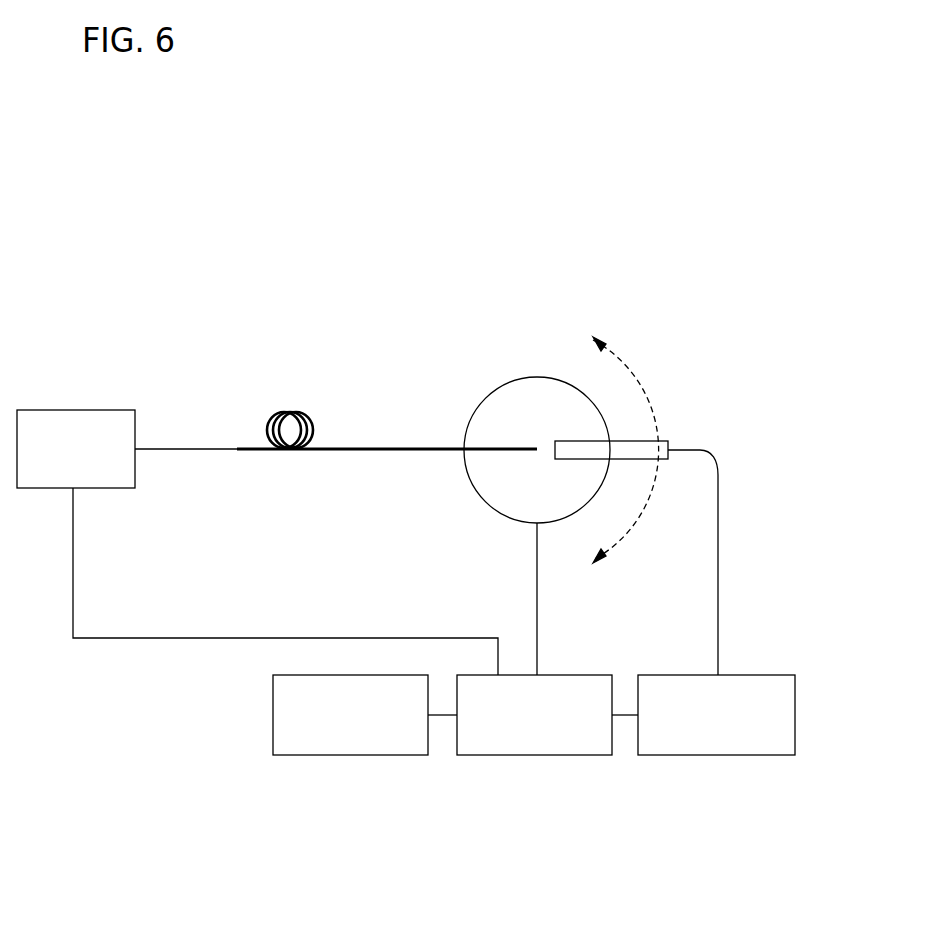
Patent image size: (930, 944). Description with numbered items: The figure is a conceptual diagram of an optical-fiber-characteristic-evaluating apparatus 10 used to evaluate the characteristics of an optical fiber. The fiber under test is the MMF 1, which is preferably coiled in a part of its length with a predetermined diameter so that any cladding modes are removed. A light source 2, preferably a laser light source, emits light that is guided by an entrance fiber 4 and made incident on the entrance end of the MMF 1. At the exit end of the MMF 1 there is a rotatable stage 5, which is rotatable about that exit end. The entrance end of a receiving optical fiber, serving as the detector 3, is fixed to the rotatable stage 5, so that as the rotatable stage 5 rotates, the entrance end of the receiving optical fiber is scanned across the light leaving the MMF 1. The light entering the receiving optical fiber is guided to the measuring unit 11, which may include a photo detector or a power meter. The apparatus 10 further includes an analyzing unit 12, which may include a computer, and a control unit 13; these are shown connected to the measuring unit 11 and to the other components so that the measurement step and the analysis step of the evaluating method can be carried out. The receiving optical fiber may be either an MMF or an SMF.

The optical-fiber-characteristic-evaluating apparatus 10 is at (700, 268).
The MMF 1 is at (290, 412).
The light source 2 is at (103, 410).
The detector 3 is at (637, 440).
The entrance fiber 4 is at (186, 447).
The rotatable stage 5 is at (537, 377).
The measuring unit 11 is at (757, 758).
The analyzing unit 12 is at (388, 758).
The control unit 13 is at (575, 758).